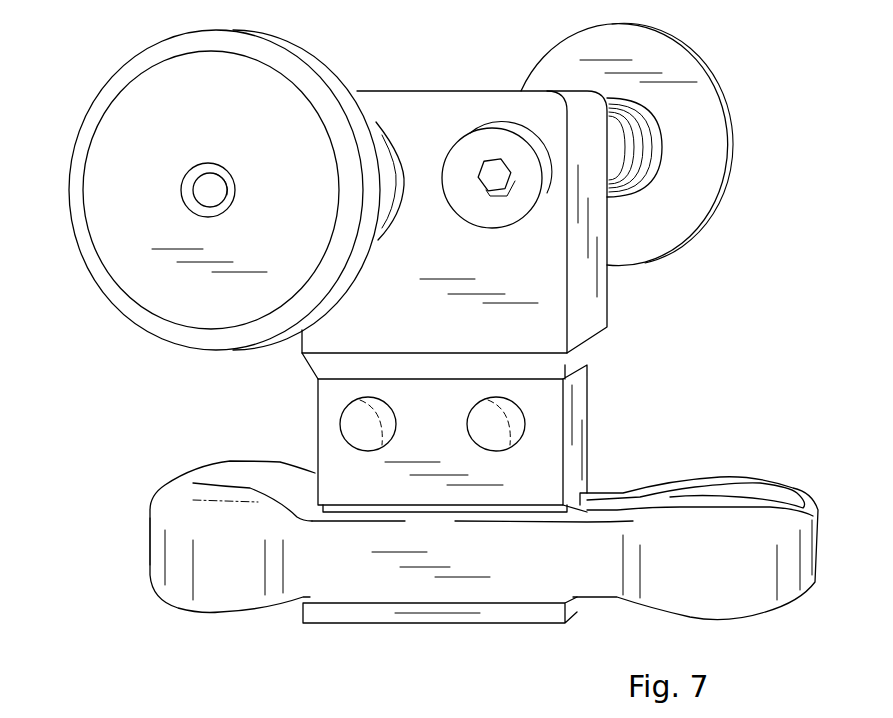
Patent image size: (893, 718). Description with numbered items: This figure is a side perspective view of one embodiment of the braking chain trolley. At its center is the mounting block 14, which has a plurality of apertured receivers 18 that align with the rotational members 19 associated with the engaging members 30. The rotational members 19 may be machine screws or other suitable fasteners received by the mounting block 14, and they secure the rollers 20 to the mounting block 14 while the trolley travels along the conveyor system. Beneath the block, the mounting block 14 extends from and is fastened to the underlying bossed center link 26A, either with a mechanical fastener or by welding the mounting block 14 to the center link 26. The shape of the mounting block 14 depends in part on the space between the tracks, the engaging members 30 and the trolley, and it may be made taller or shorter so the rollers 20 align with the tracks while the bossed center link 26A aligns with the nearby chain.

The mounting block 14 is at (537, 258).
The apertured receivers 18 is at (193, 220).
The rotational members 19 is at (207, 187).
The rollers 20 is at (97, 206).
The center link 26 is at (791, 585).
The bossed center link 26A is at (598, 503).
The engaging members 30 is at (381, 130).